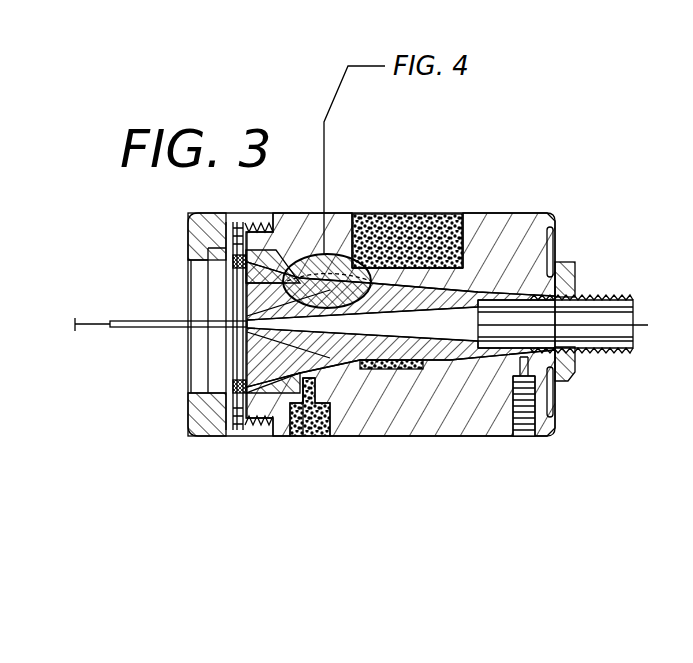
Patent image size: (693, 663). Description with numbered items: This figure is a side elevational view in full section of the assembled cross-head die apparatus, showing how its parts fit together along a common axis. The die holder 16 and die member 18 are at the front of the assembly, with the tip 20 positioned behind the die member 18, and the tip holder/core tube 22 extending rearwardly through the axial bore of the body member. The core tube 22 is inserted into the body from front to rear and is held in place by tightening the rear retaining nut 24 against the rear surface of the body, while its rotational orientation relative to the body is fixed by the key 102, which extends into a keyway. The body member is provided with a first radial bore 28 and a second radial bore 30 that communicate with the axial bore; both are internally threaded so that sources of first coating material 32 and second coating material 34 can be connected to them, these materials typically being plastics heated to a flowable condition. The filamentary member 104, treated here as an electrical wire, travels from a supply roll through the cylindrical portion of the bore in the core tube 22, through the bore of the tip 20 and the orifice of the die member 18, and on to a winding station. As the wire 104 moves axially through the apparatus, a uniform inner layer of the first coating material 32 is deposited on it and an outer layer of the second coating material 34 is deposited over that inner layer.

The die holder 16 is at (188, 270).
The die member 18 is at (205, 308).
The tip 20 is at (443, 335).
The tip holder/core tube 22 is at (515, 213).
The rear retaining nut 24 is at (571, 262).
The first radial bore 28 is at (451, 208).
The second radial bore 30 is at (329, 446).
The first coating material 32 is at (418, 213).
The second coating material 34 is at (303, 437).
The key 102 is at (571, 381).
The filamentary member 104 is at (656, 327).